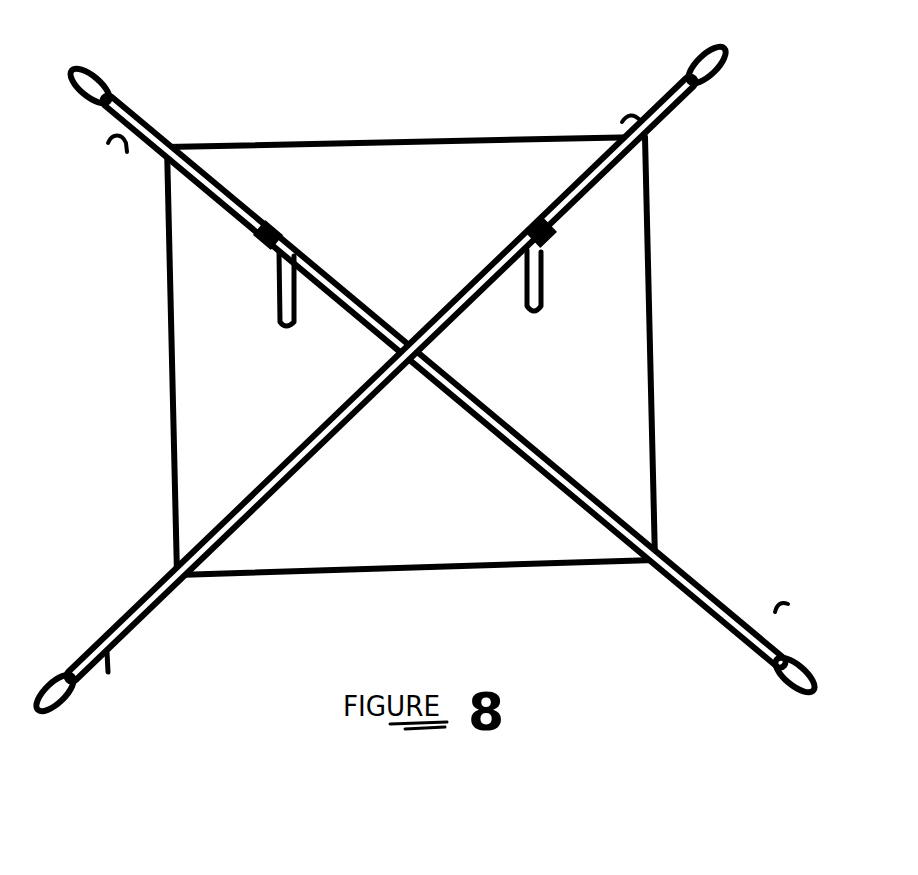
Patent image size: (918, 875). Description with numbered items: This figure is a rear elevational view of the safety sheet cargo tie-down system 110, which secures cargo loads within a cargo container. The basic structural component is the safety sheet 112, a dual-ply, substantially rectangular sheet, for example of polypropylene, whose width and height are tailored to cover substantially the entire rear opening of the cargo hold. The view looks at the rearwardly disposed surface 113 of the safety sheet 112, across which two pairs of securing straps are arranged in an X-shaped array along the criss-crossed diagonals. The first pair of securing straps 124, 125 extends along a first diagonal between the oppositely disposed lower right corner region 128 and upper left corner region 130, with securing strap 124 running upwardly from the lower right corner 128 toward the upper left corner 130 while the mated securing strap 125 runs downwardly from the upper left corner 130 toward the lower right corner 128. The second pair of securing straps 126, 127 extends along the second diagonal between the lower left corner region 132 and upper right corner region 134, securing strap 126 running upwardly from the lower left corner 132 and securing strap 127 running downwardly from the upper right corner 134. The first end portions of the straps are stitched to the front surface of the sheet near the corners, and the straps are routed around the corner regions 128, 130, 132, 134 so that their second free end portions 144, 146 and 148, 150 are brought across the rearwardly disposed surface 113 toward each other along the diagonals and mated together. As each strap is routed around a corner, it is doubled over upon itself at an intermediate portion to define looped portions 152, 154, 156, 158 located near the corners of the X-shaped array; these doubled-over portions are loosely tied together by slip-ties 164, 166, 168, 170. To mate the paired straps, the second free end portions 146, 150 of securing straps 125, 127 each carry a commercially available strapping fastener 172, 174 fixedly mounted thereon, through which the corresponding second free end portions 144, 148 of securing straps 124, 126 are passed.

The safety sheet cargo tie-down system 110 is at (725, 268).
The safety sheet 112 is at (600, 362).
The rearwardly disposed surface 113 is at (407, 245).
The securing strap 124 is at (682, 590).
The securing strap 125 is at (228, 82).
The securing strap 126 is at (157, 608).
The securing strap 127 is at (662, 108).
The corner region 128 is at (663, 543).
The corner region 130 is at (163, 166).
The corner region 132 is at (175, 570).
The corner region 134 is at (650, 160).
The second free end portion 144 is at (445, 400).
The second free end portion 146 is at (240, 193).
The second free end portion 148 is at (423, 401).
The second free end portion 150 is at (578, 190).
The looped portion 152 is at (806, 694).
The looped portion 154 is at (90, 66).
The looped portion 156 is at (50, 726).
The looped portion 158 is at (735, 52).
The slip-tie 164 is at (786, 614).
The slip-tie 166 is at (108, 141).
The slip-tie 168 is at (110, 666).
The slip-tie 170 is at (620, 110).
The strapping fastener 172 is at (262, 248).
The strapping fastener 174 is at (552, 241).